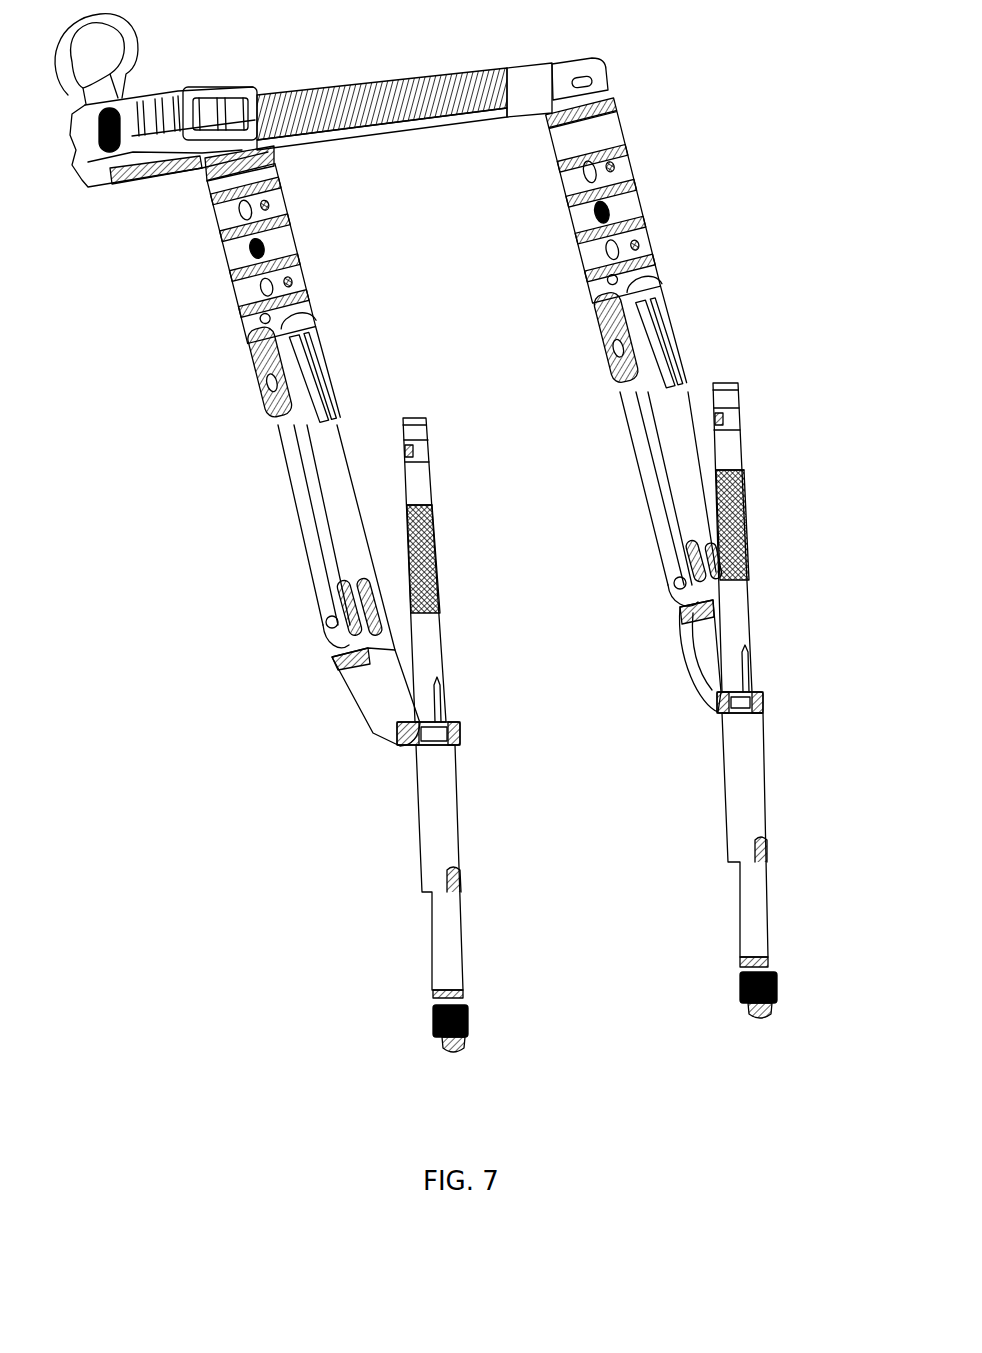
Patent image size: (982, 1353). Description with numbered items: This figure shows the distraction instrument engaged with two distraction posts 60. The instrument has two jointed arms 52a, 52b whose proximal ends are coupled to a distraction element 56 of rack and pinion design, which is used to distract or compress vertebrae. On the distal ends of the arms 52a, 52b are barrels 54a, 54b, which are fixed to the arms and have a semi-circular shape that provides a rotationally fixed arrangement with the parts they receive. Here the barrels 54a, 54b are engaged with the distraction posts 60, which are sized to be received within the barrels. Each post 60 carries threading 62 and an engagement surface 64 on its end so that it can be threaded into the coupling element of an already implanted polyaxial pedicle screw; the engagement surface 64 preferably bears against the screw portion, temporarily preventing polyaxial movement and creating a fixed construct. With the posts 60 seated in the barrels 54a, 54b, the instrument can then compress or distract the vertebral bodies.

The distraction element 56 is at (373, 85).
The arm 52a is at (681, 432).
The arm 52b is at (300, 501).
The distraction post 60 is at (437, 548).
The barrel 54a is at (753, 748).
The barrel 54b is at (433, 807).
The threading 62 is at (432, 1020).
The engagement surface 64 is at (448, 1055).